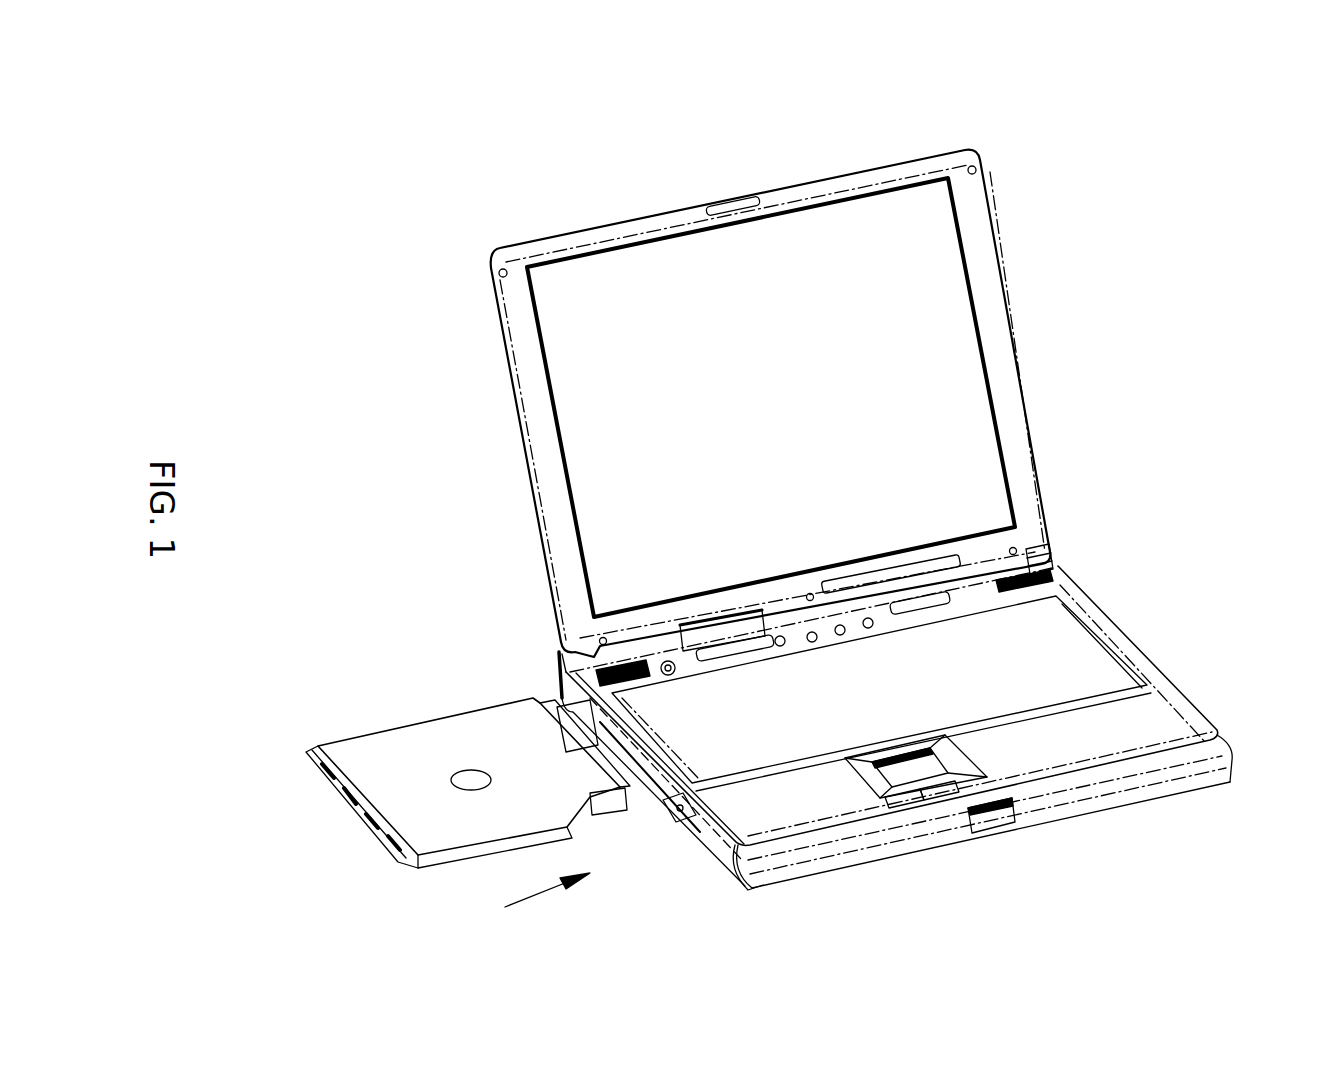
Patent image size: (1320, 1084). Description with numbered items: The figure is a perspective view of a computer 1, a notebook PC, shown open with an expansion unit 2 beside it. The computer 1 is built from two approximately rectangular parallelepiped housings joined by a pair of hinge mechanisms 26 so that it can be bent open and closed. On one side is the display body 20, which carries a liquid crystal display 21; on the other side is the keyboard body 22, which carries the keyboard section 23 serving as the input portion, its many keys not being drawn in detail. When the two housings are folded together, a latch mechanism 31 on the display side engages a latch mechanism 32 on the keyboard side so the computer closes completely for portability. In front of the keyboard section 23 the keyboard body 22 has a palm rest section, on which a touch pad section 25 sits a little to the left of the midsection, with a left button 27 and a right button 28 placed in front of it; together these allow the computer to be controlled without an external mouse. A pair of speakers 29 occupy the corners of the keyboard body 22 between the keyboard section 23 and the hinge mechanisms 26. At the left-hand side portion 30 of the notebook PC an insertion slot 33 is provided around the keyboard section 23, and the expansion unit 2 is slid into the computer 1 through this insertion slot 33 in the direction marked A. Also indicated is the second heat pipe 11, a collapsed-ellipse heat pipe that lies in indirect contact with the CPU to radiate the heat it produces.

The computer 1 is at (1073, 263).
The expansion unit 2 is at (455, 835).
The second heat pipe 11 is at (687, 813).
The display body 20 is at (958, 373).
The liquid crystal display 21 is at (550, 345).
The keyboard body 22 is at (1172, 712).
The keyboard section 23 is at (1068, 628).
The touch pad section 25 is at (913, 770).
The hinge mechanisms 26 is at (560, 657).
The left button 27 is at (933, 803).
The right button 28 is at (1012, 802).
The speakers 29 is at (1048, 578).
The left-hand side portion 30 is at (727, 860).
The latch mechanism 31 is at (733, 190).
The latch mechanism 32 is at (993, 830).
The insertion slot 33 is at (650, 770).